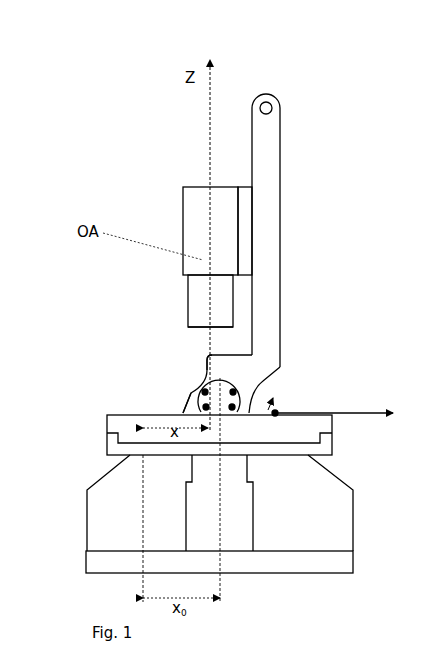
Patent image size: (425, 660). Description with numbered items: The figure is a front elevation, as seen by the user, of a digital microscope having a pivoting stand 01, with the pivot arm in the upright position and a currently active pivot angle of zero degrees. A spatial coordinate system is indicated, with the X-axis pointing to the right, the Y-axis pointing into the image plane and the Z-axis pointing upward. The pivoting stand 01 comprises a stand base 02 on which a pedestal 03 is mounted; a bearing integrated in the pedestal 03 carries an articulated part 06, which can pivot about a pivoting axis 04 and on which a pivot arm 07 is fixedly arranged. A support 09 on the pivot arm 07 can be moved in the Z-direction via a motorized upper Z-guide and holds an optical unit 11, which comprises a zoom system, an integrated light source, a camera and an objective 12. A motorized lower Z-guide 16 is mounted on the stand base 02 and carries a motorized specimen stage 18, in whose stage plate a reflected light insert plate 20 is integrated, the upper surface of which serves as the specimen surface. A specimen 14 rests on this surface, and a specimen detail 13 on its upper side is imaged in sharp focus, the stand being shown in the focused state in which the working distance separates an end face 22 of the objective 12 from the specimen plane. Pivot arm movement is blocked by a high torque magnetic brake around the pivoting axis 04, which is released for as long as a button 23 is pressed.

The pivoting stand 01 is at (71, 439).
The stand base 02 is at (107, 563).
The pedestal 03 is at (103, 513).
The pivoting axis 04 is at (206, 364).
The articulated part 06 is at (253, 404).
The pivot arm 07 is at (273, 190).
The support 09 is at (244, 185).
The optical unit 11 is at (181, 218).
The objective 12 is at (188, 296).
The specimen detail 13 is at (200, 405).
The specimen 14 is at (181, 412).
The motorized lower Z-guide 16 is at (240, 478).
The specimen stage 18 is at (336, 452).
The reflected light insert plate 20 is at (279, 410).
The end face 22 is at (190, 333).
The button 23 is at (272, 104).